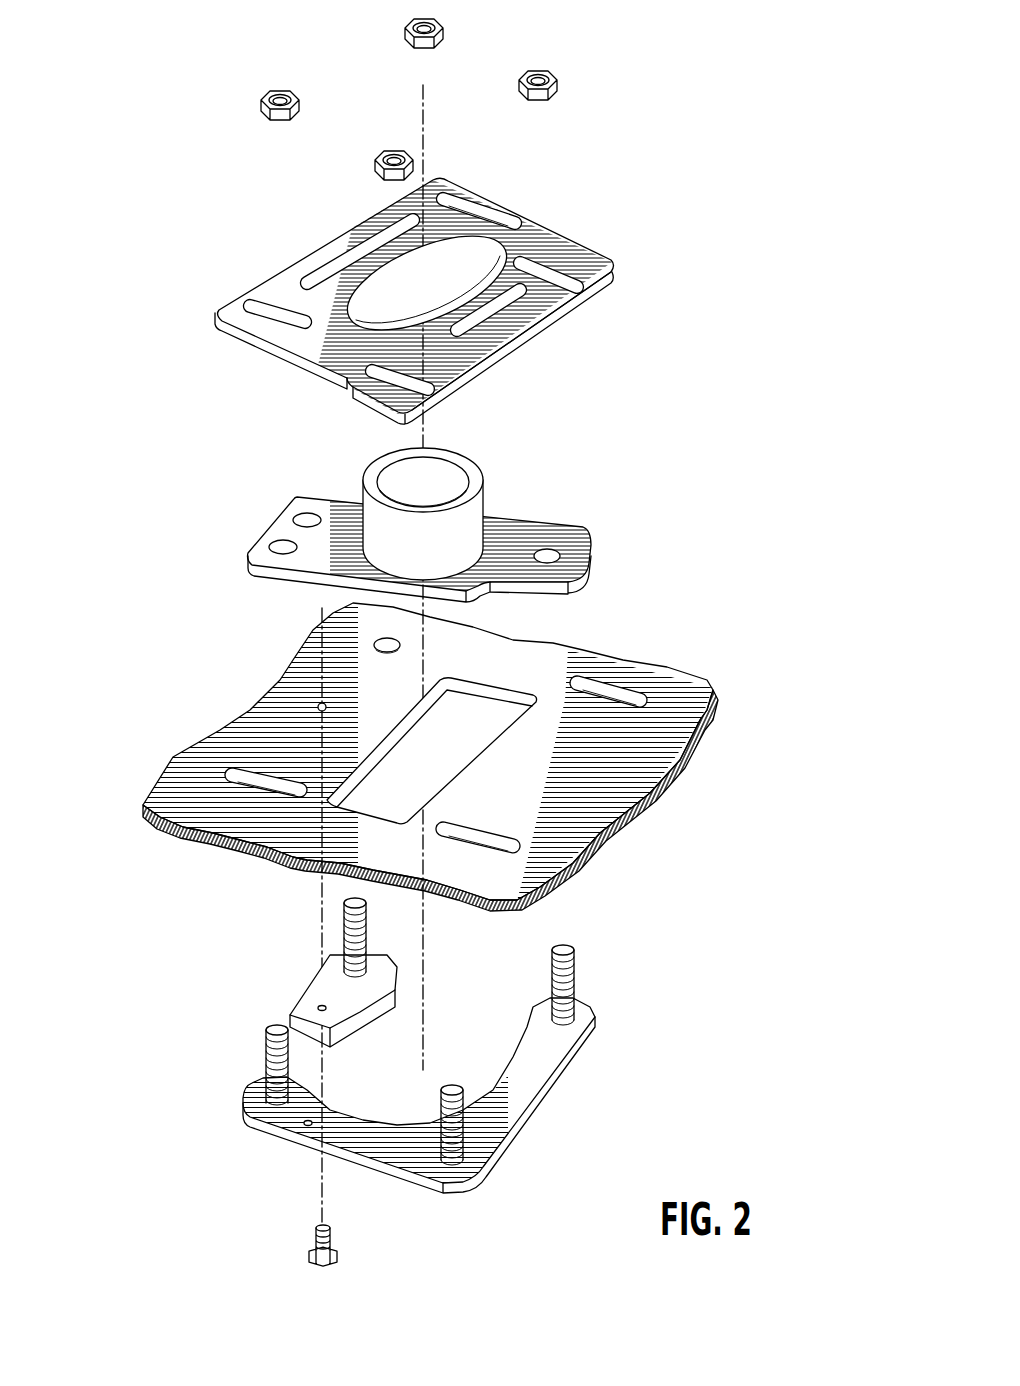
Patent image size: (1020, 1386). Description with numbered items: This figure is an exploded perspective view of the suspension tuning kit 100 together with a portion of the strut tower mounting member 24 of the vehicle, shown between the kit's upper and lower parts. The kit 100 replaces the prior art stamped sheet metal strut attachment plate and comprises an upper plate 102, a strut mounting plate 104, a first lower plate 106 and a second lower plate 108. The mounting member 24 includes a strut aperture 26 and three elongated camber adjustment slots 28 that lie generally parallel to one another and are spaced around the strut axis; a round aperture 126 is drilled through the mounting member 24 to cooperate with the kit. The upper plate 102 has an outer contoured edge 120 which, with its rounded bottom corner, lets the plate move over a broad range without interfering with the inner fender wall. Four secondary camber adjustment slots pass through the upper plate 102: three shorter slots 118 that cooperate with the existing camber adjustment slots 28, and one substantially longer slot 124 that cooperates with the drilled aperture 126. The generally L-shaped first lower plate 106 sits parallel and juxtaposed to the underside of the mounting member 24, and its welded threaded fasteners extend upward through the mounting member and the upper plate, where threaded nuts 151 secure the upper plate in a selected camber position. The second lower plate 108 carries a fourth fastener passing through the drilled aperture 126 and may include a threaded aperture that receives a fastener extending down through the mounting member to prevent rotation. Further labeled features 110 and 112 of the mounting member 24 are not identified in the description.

The suspension tuning kit 100 is at (402, 642).
The upper plate 102 is at (420, 296).
The secondary camber adjustment slot 124 is at (507, 212).
The secondary camber adjustment slots 118 is at (587, 283).
The outer contoured edge 120 is at (500, 347).
The threaded nuts 151 is at (437, 47).
The strut mounting plate 104 is at (503, 542).
The mounting member 24 is at (430, 757).
The strut aperture 26 is at (516, 688).
The elongated camber adjustment slots 28 is at (645, 686).
The top surface of plate 110 is at (617, 793).
The edge of plate 112 is at (593, 855).
The round aperture 126 is at (390, 643).
The second lower plate 108 is at (310, 986).
The first lower plate 106 is at (560, 1042).